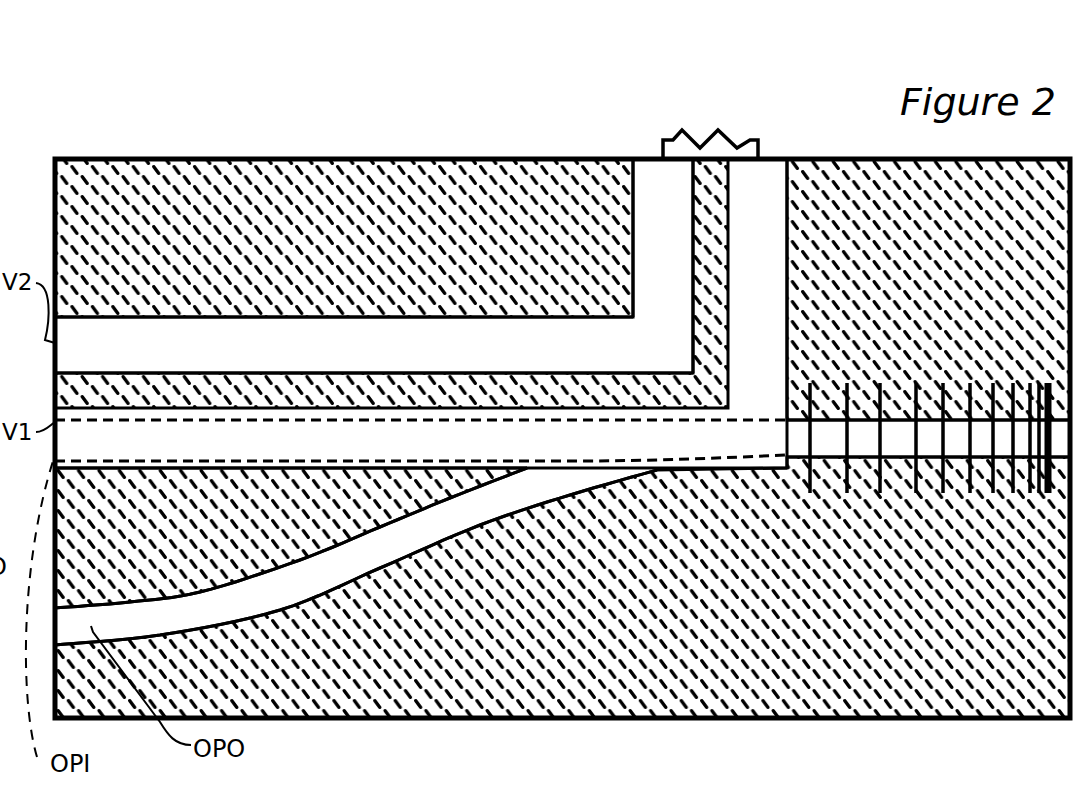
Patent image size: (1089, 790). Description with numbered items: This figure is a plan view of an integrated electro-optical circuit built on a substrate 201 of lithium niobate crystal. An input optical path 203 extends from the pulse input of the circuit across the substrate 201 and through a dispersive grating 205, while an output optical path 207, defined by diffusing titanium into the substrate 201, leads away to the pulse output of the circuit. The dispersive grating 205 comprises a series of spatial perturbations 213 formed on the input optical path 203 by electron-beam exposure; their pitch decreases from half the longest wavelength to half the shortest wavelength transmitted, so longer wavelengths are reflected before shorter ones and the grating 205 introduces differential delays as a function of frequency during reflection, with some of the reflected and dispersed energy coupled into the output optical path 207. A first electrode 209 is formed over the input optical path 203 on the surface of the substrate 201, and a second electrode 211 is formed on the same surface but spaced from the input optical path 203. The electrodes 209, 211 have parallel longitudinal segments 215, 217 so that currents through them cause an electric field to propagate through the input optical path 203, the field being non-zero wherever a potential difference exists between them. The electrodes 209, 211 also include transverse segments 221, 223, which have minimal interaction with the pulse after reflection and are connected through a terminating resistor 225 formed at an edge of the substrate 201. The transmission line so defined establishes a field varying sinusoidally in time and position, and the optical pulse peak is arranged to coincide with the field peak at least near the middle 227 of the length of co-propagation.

The substrate 201 is at (330, 157).
The input optical path 203 is at (803, 415).
The dispersive grating 205 is at (803, 527).
The output optical path 207 is at (345, 583).
The first electrode 209 is at (180, 468).
The second electrode 211 is at (322, 330).
The spatial perturbations 213 is at (1012, 487).
The longitudinal segment 215 is at (125, 470).
The longitudinal segment 217 is at (430, 316).
The transverse segment 221 is at (790, 203).
The transverse segment 223 is at (633, 185).
The terminating resistor 225 is at (678, 130).
The middle of the length of co-propagation 227 is at (368, 470).